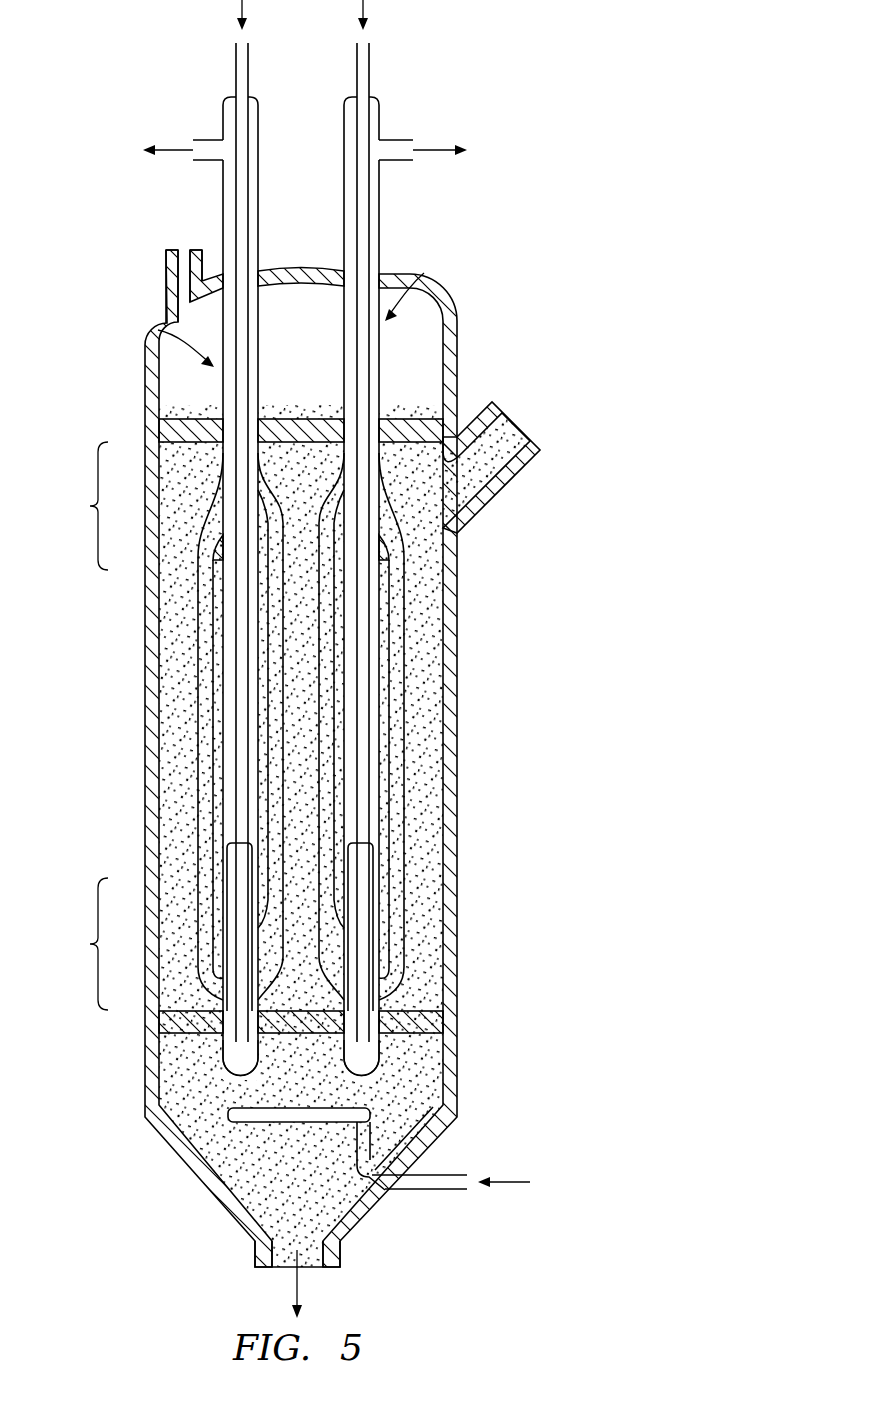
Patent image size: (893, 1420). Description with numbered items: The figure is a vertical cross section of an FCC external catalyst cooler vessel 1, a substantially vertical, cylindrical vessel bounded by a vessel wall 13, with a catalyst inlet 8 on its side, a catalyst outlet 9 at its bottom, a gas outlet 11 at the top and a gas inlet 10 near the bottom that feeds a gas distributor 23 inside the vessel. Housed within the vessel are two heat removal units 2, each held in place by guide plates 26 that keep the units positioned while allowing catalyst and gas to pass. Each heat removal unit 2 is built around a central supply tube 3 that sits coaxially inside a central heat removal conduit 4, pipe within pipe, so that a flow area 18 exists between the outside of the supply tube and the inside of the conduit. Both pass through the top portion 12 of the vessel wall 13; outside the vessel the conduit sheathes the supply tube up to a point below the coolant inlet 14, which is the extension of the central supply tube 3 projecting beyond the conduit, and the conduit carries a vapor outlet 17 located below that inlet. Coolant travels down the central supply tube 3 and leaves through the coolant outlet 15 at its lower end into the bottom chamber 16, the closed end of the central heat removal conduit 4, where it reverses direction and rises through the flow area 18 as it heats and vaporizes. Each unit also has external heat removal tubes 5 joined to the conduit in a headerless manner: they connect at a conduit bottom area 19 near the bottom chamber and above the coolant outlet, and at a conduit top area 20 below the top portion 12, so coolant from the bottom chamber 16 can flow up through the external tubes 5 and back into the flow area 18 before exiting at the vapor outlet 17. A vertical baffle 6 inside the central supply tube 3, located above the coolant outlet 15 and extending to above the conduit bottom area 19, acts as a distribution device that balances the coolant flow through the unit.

The external catalyst cooler vessel 1 is at (254, 758).
The heat removal unit 2 is at (152, 327).
The central supply tube 3 is at (223, 400).
The central heat removal conduit 4 is at (223, 453).
The external heat removal tube 5 is at (241, 710).
The vertical baffle 6 is at (375, 876).
The catalyst inlet 8 is at (514, 410).
The catalyst outlet 9 is at (312, 1270).
The gas inlet 10 is at (472, 1180).
The gas outlet 11 is at (183, 248).
The top portion 12 is at (303, 265).
The vessel wall 13 is at (145, 635).
The coolant inlet 14 is at (368, 45).
The coolant outlet 15 is at (375, 1065).
The bottom chamber 16 is at (240, 1066).
The vapor outlet 17 is at (414, 148).
The flow area 18 is at (389, 730).
The conduit bottom area 19 is at (79, 944).
The conduit top area 20 is at (78, 506).
The gas distributor 23 is at (232, 1112).
The guide plate 26 is at (158, 430).